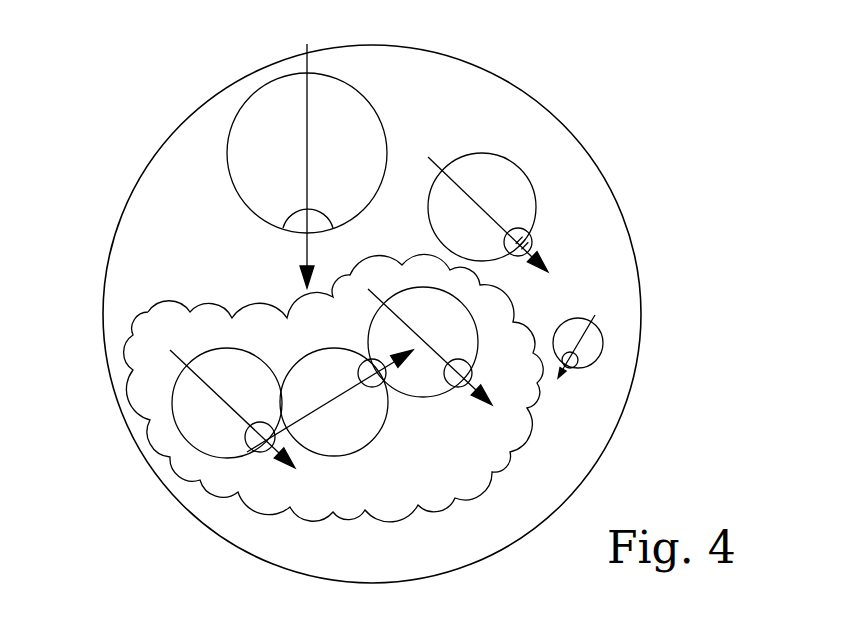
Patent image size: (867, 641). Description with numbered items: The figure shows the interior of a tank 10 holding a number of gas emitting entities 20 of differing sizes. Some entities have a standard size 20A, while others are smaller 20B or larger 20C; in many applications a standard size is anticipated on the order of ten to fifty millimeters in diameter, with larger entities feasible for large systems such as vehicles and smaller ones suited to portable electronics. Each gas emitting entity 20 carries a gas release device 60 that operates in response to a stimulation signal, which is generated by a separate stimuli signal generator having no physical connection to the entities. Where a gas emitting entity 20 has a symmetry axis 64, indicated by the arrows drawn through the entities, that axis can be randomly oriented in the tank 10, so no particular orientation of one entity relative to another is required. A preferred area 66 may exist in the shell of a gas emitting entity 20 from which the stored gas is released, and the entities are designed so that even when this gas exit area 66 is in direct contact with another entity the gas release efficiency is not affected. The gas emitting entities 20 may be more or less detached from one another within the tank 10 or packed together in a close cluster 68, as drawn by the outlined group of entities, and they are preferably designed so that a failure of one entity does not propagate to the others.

The tank 10 is at (110, 253).
The gas emitting entity 20 is at (208, 430).
The standard size gas emitting entity 20A is at (518, 160).
The smaller gas emitting entity 20B is at (603, 345).
The larger gas emitting entity 20C is at (282, 80).
The gas release device 60 is at (530, 233).
The symmetry axis 64 is at (440, 167).
The preferred area 66 is at (518, 253).
The close cluster 68 is at (183, 317).